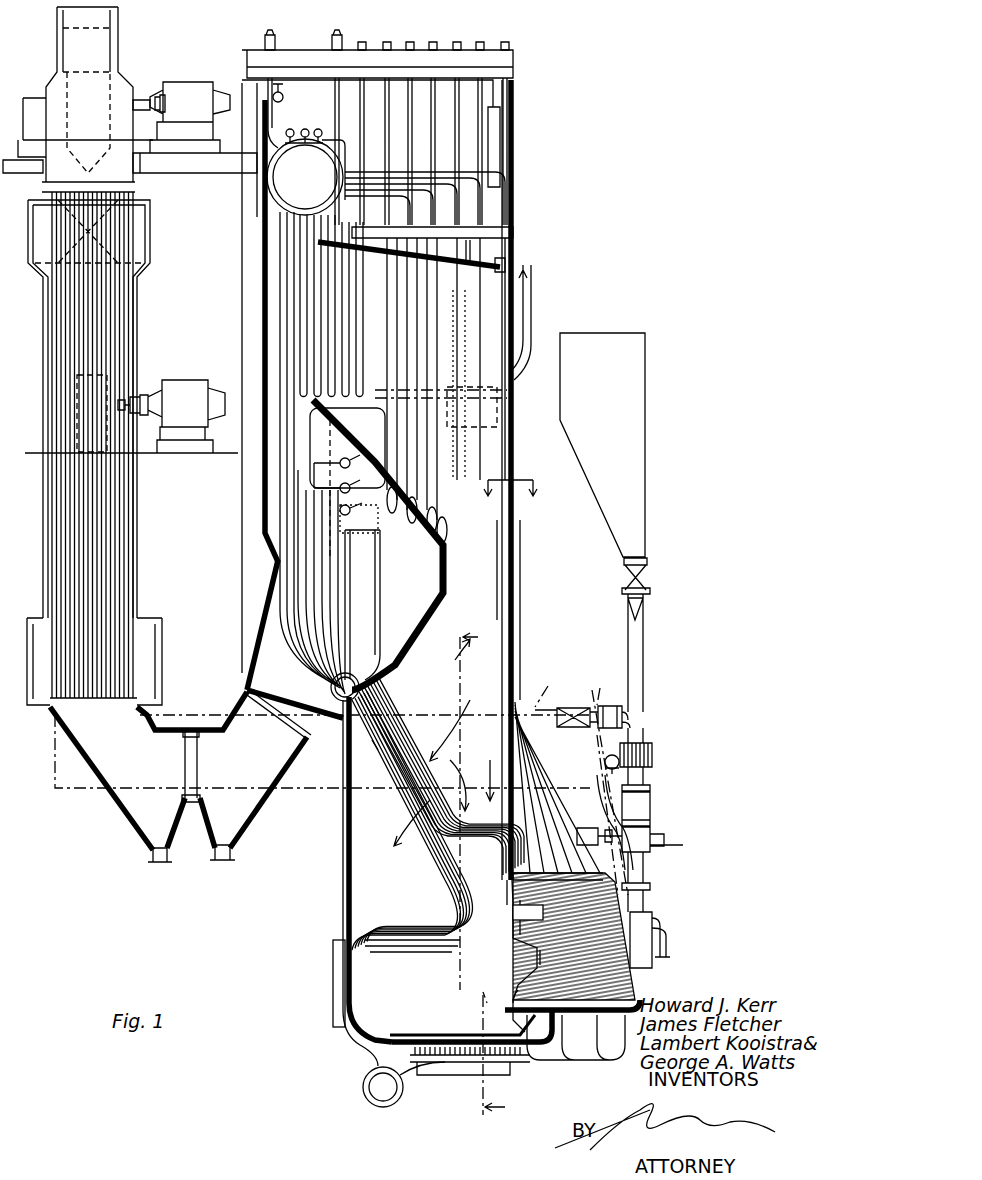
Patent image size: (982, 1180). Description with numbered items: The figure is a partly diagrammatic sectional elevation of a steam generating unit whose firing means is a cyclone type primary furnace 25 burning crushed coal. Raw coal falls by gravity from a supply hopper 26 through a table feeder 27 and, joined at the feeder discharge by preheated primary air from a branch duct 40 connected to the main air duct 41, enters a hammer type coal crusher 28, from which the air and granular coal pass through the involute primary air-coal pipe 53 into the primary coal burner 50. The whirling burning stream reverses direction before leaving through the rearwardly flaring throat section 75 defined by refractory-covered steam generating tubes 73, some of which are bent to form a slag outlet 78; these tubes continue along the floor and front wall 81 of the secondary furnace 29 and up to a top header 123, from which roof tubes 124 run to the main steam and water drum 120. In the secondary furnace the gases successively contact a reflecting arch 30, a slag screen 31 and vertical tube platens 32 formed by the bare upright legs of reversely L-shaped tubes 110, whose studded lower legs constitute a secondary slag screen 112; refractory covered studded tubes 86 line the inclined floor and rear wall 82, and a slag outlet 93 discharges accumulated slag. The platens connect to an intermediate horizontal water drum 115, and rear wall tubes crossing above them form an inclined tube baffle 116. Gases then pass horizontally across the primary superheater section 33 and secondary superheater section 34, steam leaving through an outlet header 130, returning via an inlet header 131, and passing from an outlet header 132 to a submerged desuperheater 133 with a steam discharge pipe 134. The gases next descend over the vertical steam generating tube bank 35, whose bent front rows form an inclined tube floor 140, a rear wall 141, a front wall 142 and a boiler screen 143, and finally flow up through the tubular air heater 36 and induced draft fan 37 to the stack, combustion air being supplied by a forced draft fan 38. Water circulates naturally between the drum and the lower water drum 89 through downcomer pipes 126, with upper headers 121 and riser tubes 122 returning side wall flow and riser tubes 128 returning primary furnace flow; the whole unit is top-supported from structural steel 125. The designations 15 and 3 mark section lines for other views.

The induced draft fan 37 is at (95, 95).
The forced draft fan 38 is at (107, 387).
The tubular air heater 36 is at (112, 563).
The vertical steam generating tube bank 35 is at (295, 480).
The structural steel 125 is at (516, 57).
The main steam and water drum 120 is at (305, 172).
The riser tubes 122 is at (485, 205).
The upper headers 121 is at (513, 232).
The top header 123 is at (507, 262).
The roof tubes 124 is at (468, 267).
The steam discharge pipe 134 is at (530, 287).
The secondary superheater section 34 is at (346, 326).
The primary superheater section 33 is at (428, 328).
The submerged desuperheater 133 is at (505, 408).
The section line 15 is at (511, 502).
The inclined tube floor 140 is at (349, 484).
The outlet header 132 is at (342, 459).
The inlet header 131 is at (350, 479).
The outlet header 130 is at (364, 502).
The downcomer pipes 126 is at (345, 535).
The riser tubes 128 is at (515, 565).
The front wall 81 is at (516, 604).
The steam generating tubes 73 is at (505, 548).
The front wall 142 is at (358, 588).
The rear wall 141 is at (380, 593).
The boiler screen 143 is at (433, 626).
The section line 3 is at (490, 872).
The intermediate horizontal water drum 115 is at (362, 688).
The inclined tube baffle 116 is at (368, 742).
The vertical tube platens 32 is at (380, 765).
The rear wall 82 is at (342, 866).
The refractory covered studded tubes 86 is at (343, 896).
The secondary furnace 29 is at (418, 878).
The reversely L-shaped tubes 110 is at (448, 905).
The secondary slag screen 112 is at (413, 961).
The reflecting arch 30 is at (507, 956).
The slag screen 31 is at (415, 1003).
The throat section 75 is at (524, 961).
The slag outlet 78 is at (506, 990).
The slag outlet 93 is at (486, 985).
The lower water drum 89 is at (373, 1100).
The cyclone type primary furnace 25 is at (588, 962).
The supply hopper 26 is at (620, 419).
The table feeder 27 is at (652, 755).
The hammer type coal crusher 28 is at (647, 803).
The primary air-coal pipe 53 is at (640, 902).
The primary coal burner 50 is at (645, 962).
The branch duct 40 is at (613, 767).
The main air duct 41 is at (566, 695).